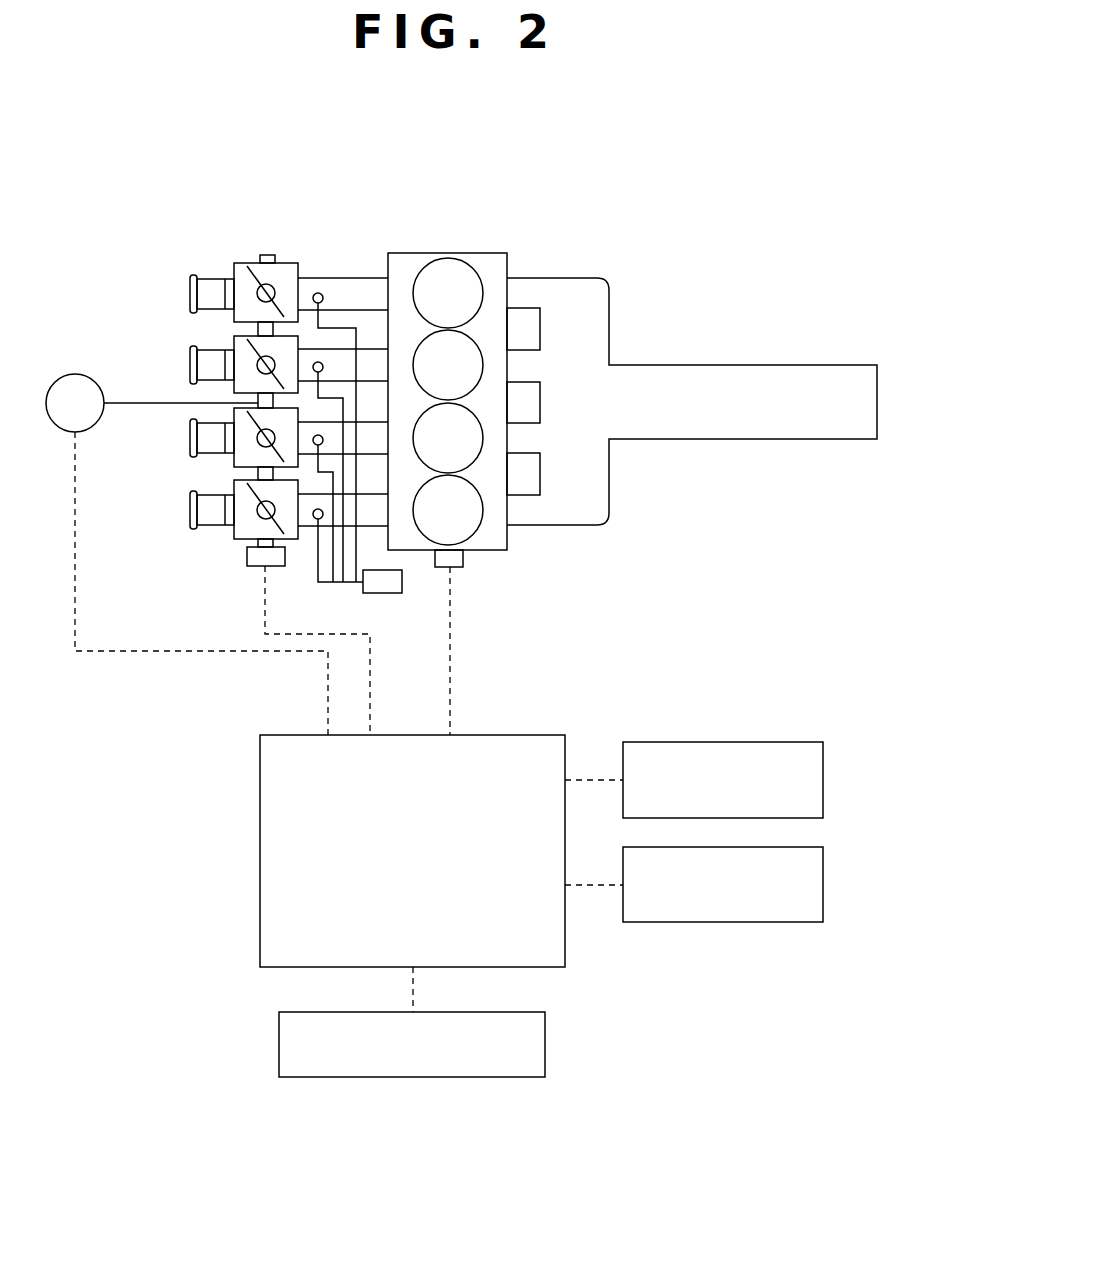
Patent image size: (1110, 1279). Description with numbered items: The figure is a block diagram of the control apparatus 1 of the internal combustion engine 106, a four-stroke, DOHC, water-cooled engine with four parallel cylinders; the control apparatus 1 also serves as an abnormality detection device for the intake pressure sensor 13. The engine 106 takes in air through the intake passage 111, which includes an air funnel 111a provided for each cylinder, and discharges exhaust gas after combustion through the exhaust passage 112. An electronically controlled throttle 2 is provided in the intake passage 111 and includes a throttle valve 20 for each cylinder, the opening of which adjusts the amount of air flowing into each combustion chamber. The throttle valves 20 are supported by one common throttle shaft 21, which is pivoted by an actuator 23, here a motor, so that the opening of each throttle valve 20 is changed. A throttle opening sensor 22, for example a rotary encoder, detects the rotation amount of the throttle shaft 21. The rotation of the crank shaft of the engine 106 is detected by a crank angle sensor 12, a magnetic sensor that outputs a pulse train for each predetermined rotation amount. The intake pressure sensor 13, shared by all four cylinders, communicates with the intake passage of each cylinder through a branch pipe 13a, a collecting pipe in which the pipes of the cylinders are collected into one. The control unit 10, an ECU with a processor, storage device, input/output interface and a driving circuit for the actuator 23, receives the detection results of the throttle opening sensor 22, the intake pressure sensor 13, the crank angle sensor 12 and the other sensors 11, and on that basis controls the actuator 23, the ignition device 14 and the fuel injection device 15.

The control apparatus 1 is at (224, 182).
The throttle 2 is at (286, 233).
The control unit 10 is at (260, 792).
The other sensors 11 is at (545, 1042).
The crank angle sensor 12 is at (463, 562).
The intake pressure sensor 13 is at (389, 593).
The branch pipe 13a is at (325, 582).
The ignition device 14 is at (823, 776).
The fuel injection device 15 is at (823, 881).
The throttle valve 20 is at (245, 262).
The throttle shaft 21 is at (262, 255).
The throttle opening sensor 22 is at (257, 567).
The actuator 23 is at (75, 374).
The internal combustion engine 106 is at (485, 235).
The intake passage 111 is at (336, 240).
The air funnel 111a is at (190, 291).
The exhaust passage 112 is at (635, 364).